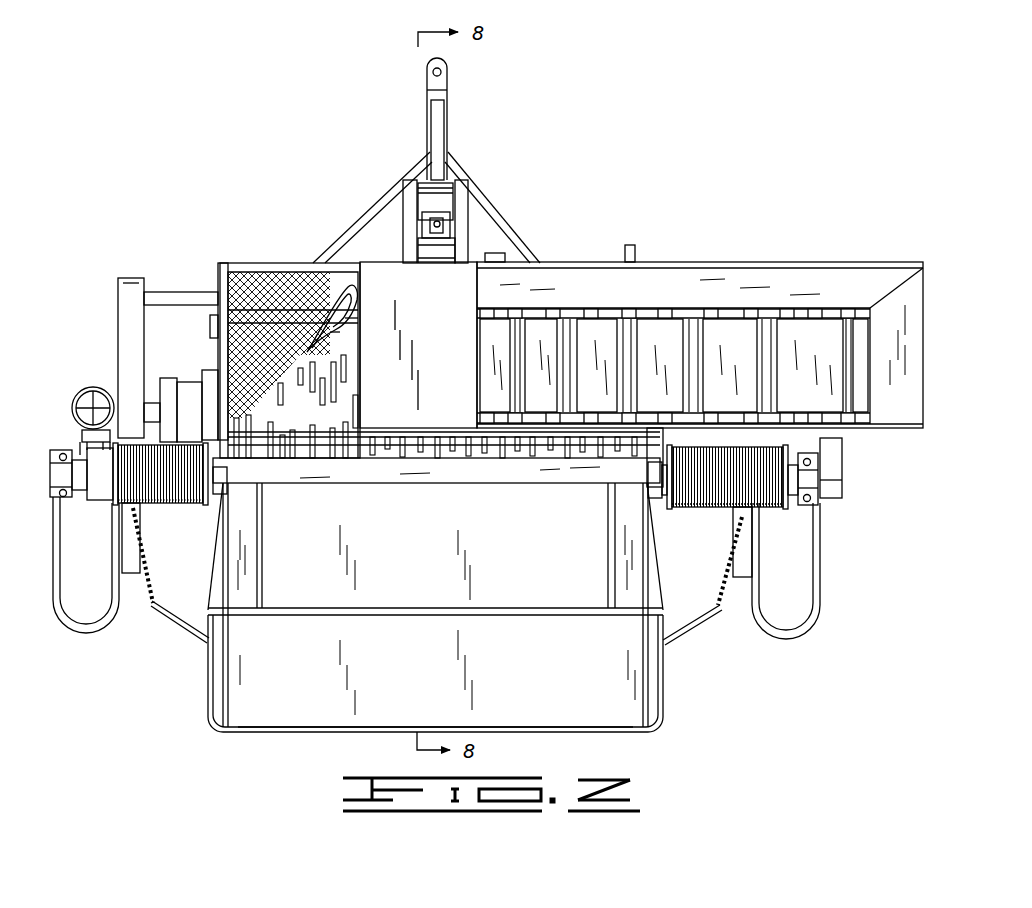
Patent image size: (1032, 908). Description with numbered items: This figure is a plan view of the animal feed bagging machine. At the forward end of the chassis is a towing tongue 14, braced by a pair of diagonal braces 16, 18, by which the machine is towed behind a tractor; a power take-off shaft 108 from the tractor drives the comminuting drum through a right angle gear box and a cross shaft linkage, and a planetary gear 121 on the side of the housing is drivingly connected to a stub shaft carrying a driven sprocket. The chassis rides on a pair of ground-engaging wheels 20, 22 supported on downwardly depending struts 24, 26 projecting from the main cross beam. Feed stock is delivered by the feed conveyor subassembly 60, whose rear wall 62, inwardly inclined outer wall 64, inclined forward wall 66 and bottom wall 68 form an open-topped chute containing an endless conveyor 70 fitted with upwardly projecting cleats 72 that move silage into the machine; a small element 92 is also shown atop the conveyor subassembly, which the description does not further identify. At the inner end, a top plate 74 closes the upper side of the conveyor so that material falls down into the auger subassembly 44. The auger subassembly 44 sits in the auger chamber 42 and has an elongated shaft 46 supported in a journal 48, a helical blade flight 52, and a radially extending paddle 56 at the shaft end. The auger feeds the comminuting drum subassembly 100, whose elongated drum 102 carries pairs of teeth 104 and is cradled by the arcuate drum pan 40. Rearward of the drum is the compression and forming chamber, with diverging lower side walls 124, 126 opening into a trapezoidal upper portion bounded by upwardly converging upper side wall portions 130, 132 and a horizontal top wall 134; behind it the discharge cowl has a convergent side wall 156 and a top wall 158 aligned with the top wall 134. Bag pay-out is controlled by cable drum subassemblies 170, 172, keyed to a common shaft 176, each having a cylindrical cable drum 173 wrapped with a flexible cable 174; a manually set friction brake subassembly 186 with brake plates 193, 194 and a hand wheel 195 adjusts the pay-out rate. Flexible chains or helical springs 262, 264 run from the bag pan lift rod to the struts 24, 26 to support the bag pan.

The towing tongue 14 is at (430, 95).
The diagonal brace 16 is at (370, 218).
The diagonal brace 18 is at (483, 200).
The ground-engaging wheel 20 is at (80, 615).
The ground-engaging wheel 22 is at (785, 615).
The strut 24 is at (141, 540).
The strut 26 is at (737, 515).
The drum pan 40 is at (467, 453).
The auger chamber 42 is at (345, 285).
The auger subassembly 44 is at (352, 305).
The shaft 46 is at (353, 323).
The journal 48 is at (210, 327).
The helical blade flight 52 is at (333, 332).
The paddle 56 is at (229, 346).
The feed conveyor subassembly 60 is at (708, 257).
The rear wall 62 is at (865, 428).
The outer wall 64 is at (911, 408).
The forward wall 66 is at (858, 280).
The bottom wall 68 is at (737, 343).
The endless conveyor 70 is at (588, 308).
The cleats 72 is at (637, 347).
The top plate 74 is at (422, 408).
The stub 92 is at (628, 245).
The comminuting drum subassembly 100 is at (258, 447).
The drum 102 is at (316, 420).
The teeth 104 is at (330, 450).
The power take-off shaft 108 is at (437, 135).
The planetary gear 121 is at (187, 398).
The lower side wall 124 is at (218, 582).
The lower side wall 126 is at (655, 583).
The upper side wall portion 130 is at (243, 527).
The upper side wall portion 132 is at (632, 530).
The top wall 134 is at (447, 566).
The side wall 156 is at (640, 655).
The top wall 158 is at (442, 687).
The cable drum subassembly 170 is at (142, 470).
The cable drum subassembly 172 is at (777, 520).
The cable drum 173 is at (223, 497).
The cable 174 is at (683, 487).
The shaft 176 is at (62, 452).
The friction brake subassembly 186 is at (89, 488).
The friction brake subassembly plate 193 is at (80, 462).
The friction brake subassembly plate 194 is at (112, 432).
The hand wheel 195 is at (85, 388).
The chain or spring 262 is at (140, 590).
The chain or spring 264 is at (727, 587).